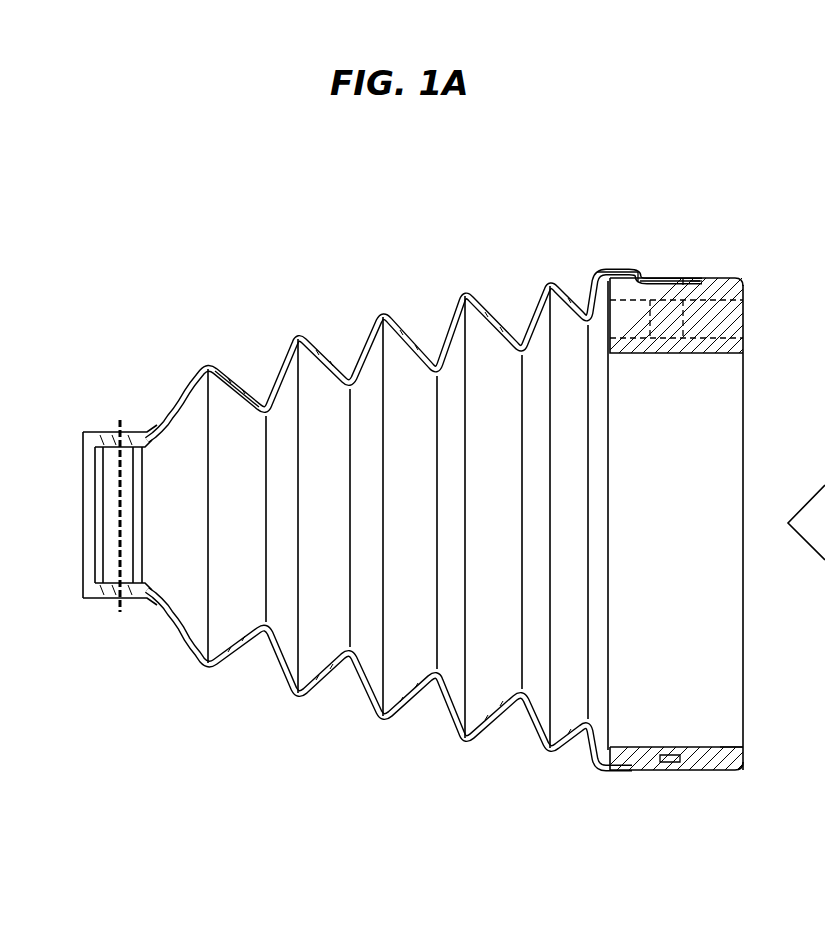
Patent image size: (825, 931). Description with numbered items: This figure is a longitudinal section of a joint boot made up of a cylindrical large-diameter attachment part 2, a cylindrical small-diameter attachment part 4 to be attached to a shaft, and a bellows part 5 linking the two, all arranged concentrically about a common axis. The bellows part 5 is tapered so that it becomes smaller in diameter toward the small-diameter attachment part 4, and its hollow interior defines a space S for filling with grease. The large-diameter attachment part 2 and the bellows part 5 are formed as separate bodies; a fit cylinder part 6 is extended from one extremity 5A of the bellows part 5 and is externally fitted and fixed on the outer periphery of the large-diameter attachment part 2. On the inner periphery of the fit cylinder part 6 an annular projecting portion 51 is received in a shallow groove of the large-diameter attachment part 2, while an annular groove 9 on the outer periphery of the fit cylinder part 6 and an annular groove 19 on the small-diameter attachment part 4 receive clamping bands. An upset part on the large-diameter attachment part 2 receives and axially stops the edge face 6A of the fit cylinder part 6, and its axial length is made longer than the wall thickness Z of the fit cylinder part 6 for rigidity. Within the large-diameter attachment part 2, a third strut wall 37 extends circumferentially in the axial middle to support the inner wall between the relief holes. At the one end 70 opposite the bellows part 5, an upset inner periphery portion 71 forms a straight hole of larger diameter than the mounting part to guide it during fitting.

The large-diameter attachment part 2 is at (706, 498).
The small-diameter attachment part 4 is at (103, 418).
The bellows part 5 is at (375, 272).
The one extremity of the bellows part 5A is at (598, 268).
The fit cylinder part 6 is at (652, 283).
The edge face of the fit cylinder part 6A is at (696, 278).
The annular groove 9 is at (667, 755).
The annular groove 19 is at (118, 600).
The third strut wall 37 is at (657, 353).
The annular projecting portion 51 is at (677, 745).
The one end of the large-diameter attachment part 70 is at (740, 770).
The upset inner periphery portion 71 is at (740, 745).
The space S is at (237, 408).
The wall thickness of the fit cylinder part Z is at (685, 281).